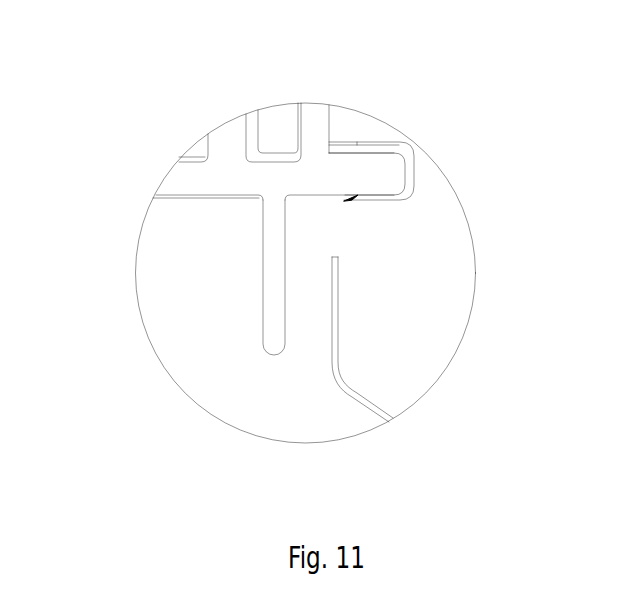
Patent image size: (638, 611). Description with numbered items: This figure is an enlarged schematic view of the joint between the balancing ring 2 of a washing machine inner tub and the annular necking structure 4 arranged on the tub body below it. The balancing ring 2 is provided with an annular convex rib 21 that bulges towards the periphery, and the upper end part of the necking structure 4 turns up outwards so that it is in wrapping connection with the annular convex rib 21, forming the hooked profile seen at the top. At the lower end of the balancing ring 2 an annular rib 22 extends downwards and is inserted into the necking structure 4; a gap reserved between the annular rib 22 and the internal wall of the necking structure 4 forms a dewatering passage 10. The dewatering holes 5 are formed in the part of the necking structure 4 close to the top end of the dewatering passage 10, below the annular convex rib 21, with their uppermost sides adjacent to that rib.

The balancing ring 2 is at (236, 158).
The annular convex rib 21 is at (382, 169).
The dewatering holes 5 is at (336, 233).
The dewatering passage 10 is at (213, 348).
The annular rib 22 is at (277, 277).
The annular necking structure 4 is at (335, 322).